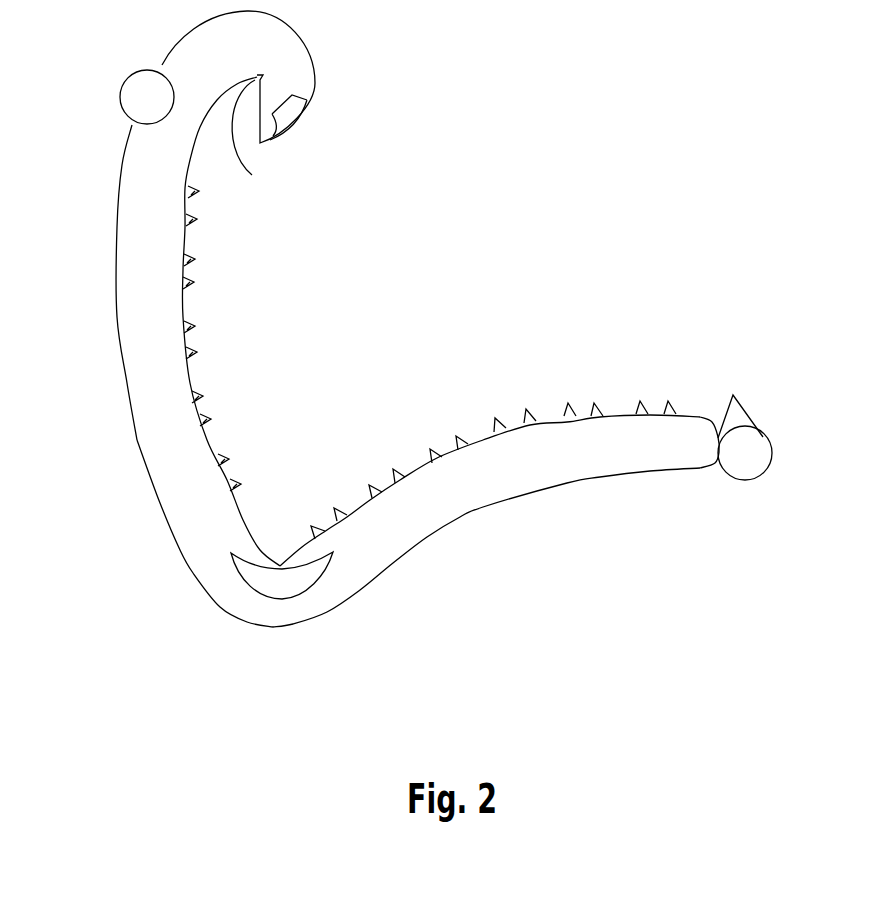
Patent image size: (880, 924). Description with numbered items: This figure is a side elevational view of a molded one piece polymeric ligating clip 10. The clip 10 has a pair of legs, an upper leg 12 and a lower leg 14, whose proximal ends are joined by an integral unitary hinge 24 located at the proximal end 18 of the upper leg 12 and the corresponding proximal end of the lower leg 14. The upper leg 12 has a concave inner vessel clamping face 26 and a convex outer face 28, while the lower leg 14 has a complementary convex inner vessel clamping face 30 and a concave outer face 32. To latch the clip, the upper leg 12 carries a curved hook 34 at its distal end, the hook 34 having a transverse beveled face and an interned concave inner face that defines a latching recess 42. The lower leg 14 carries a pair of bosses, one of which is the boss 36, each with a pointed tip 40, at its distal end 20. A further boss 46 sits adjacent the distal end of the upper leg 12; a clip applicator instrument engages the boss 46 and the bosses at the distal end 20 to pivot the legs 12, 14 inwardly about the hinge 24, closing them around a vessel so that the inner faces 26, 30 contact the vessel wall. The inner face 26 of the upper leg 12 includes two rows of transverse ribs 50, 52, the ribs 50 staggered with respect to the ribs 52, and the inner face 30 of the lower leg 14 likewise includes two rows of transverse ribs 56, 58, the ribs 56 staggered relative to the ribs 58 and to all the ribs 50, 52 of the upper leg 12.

The ligating clip 10 is at (468, 222).
The upper leg 12 is at (102, 303).
The lower leg 14 is at (602, 520).
The proximal end 18 is at (193, 572).
The distal end 20 is at (780, 470).
The hinge 24 is at (273, 627).
The concave inner vessel clamping face 26 is at (190, 380).
The convex outer face 28 is at (118, 367).
The convex inner vessel clamping face 30 is at (485, 440).
The concave outer face 32 is at (480, 507).
The curved hook 34 is at (300, 50).
The boss 36 is at (757, 457).
The pointed tip 40 is at (733, 395).
The latching recess 42 is at (264, 135).
The boss 46 is at (120, 95).
The transverse ribs 50 is at (190, 199).
The transverse ribs 52 is at (190, 226).
The transverse ribs 56 is at (350, 507).
The transverse ribs 58 is at (320, 525).